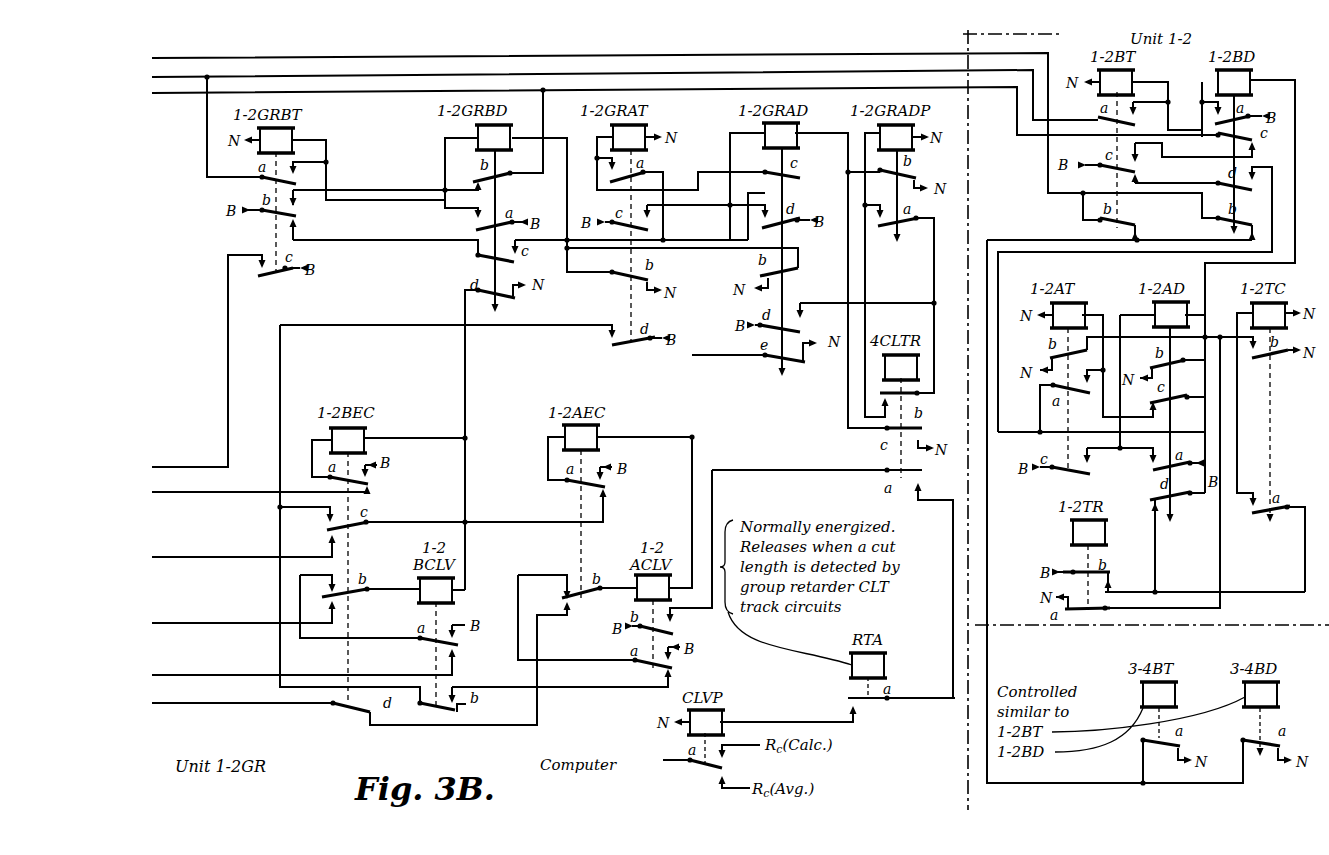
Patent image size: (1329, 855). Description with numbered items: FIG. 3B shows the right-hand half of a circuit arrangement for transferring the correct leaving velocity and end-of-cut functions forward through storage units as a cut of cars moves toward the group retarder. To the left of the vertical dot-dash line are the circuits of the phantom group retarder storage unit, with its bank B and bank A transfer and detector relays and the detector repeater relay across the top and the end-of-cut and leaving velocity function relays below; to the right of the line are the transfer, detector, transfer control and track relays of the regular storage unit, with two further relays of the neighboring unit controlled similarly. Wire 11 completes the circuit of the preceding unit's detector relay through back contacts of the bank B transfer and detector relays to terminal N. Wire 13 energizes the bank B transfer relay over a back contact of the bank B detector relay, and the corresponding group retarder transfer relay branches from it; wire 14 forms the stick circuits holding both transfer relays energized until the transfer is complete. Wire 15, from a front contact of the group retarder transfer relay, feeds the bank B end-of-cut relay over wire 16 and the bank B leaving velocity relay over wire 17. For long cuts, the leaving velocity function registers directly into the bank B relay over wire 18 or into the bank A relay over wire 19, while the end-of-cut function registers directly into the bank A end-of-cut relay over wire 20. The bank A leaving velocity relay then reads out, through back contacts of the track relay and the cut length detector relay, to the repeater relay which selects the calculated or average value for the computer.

The wire 11 is at (174, 56).
The wire 13 is at (174, 92).
The wire 14 is at (174, 75).
The wire 15 is at (174, 465).
The wire 16 is at (174, 490).
The wire 17 is at (174, 672).
The wire 18 is at (174, 620).
The wire 19 is at (174, 700).
The wire 20 is at (174, 554).